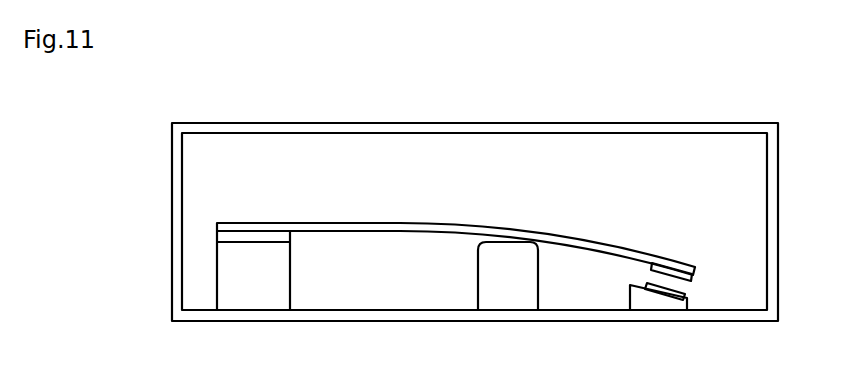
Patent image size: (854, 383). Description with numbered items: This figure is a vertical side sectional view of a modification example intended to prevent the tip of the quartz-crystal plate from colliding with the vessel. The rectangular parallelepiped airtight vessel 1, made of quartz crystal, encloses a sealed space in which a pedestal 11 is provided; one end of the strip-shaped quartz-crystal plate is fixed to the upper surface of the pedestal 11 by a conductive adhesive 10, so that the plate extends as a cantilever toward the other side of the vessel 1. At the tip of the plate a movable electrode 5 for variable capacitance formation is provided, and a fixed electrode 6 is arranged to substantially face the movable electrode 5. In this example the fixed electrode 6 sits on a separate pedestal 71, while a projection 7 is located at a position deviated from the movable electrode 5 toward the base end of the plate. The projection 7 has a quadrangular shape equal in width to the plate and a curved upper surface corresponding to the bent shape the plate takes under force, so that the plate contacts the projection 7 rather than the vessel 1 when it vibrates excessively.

The airtight vessel 1 is at (669, 123).
The conductive adhesive 10 is at (218, 233).
The pedestal 11 is at (290, 289).
The projection 7 is at (507, 302).
The pedestal 71 is at (657, 302).
The fixed electrode 6 is at (688, 297).
The movable electrode 5 is at (690, 282).